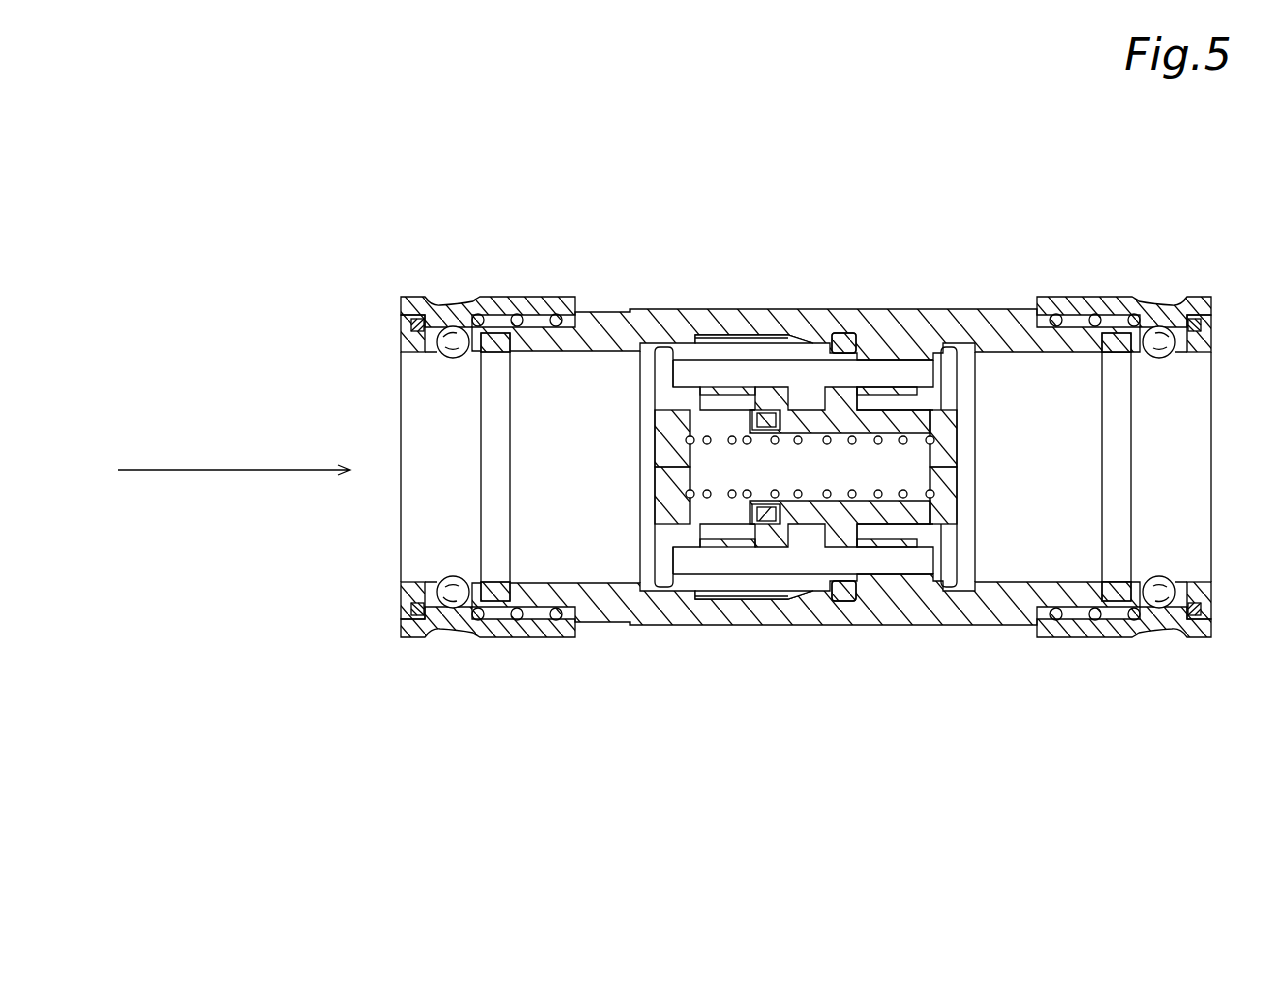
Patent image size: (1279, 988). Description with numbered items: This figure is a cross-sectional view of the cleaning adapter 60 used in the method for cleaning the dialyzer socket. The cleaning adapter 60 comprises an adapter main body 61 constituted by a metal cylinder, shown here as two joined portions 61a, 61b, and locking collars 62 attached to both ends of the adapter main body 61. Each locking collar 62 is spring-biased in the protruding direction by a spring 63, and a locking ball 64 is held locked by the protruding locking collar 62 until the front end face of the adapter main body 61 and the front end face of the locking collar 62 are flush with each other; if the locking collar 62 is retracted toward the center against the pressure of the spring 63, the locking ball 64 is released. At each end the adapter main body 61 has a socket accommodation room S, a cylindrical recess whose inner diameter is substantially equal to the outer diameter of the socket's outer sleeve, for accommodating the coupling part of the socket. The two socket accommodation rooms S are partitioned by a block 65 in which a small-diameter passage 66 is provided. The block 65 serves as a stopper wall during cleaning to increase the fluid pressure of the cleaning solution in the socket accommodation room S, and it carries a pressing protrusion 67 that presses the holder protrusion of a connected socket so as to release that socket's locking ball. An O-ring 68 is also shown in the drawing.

The cleaning adapter 60 is at (508, 700).
The adapter main body 61 is at (806, 538).
The first body half 61a is at (665, 605).
The second body half 61b is at (980, 510).
The locking collar 62 is at (440, 304).
The spring 63 is at (518, 313).
The locking ball 64 is at (436, 354).
The block 65 is at (870, 407).
The small-diameter passage 66 is at (767, 373).
The pressing protrusion 67 is at (690, 367).
The O-ring 68 is at (500, 352).
The socket accommodation room S is at (558, 491).